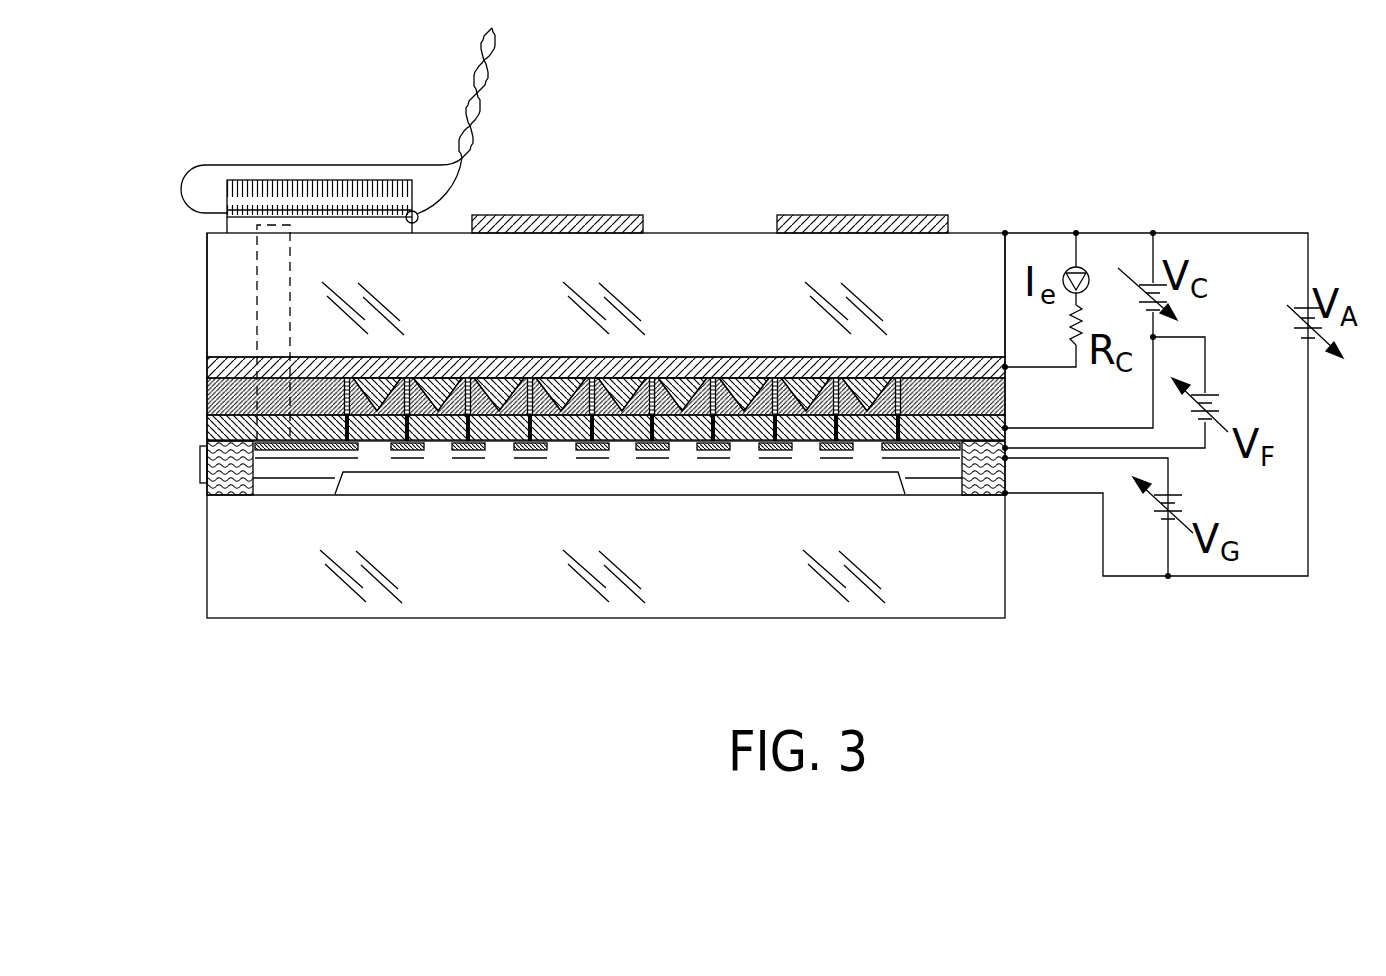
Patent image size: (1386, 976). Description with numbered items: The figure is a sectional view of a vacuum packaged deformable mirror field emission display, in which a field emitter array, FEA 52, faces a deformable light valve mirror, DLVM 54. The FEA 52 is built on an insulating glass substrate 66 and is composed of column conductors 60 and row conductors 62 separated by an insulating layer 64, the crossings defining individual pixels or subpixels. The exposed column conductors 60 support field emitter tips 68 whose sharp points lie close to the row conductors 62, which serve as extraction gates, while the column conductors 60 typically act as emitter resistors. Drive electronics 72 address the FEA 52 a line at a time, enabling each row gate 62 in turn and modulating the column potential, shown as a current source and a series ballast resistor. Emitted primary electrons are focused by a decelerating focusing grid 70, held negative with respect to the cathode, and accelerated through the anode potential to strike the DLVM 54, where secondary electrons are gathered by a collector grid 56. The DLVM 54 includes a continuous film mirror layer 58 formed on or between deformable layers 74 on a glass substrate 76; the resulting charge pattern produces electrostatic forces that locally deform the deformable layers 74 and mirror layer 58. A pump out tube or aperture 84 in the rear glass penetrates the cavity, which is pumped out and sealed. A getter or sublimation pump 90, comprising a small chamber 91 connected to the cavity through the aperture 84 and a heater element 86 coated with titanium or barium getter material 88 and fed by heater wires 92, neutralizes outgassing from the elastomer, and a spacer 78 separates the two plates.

The FEA 52 is at (196, 232).
The DLVM 54 is at (196, 452).
The collector grid 56 is at (705, 460).
The mirror layer 58 is at (527, 484).
The column conductors 60 is at (484, 356).
The row conductors 62 is at (378, 452).
The insulating layer 64 is at (774, 385).
The insulating substrate 66 is at (712, 317).
The field emitter tips 68 is at (853, 420).
The decelerating focusing grid 70 is at (610, 446).
The drive electronics 72 is at (560, 215).
The deformable layers 74 is at (440, 480).
The substrate 76 is at (759, 600).
The spacer wall 78 is at (196, 532).
The pump out tube or aperture 84 is at (291, 262).
The heater element 86 is at (280, 178).
The getter material 88 is at (313, 215).
The getter or sublimation pump 90 is at (210, 123).
The small chamber 91 is at (287, 203).
The heater wires 92 is at (465, 93).